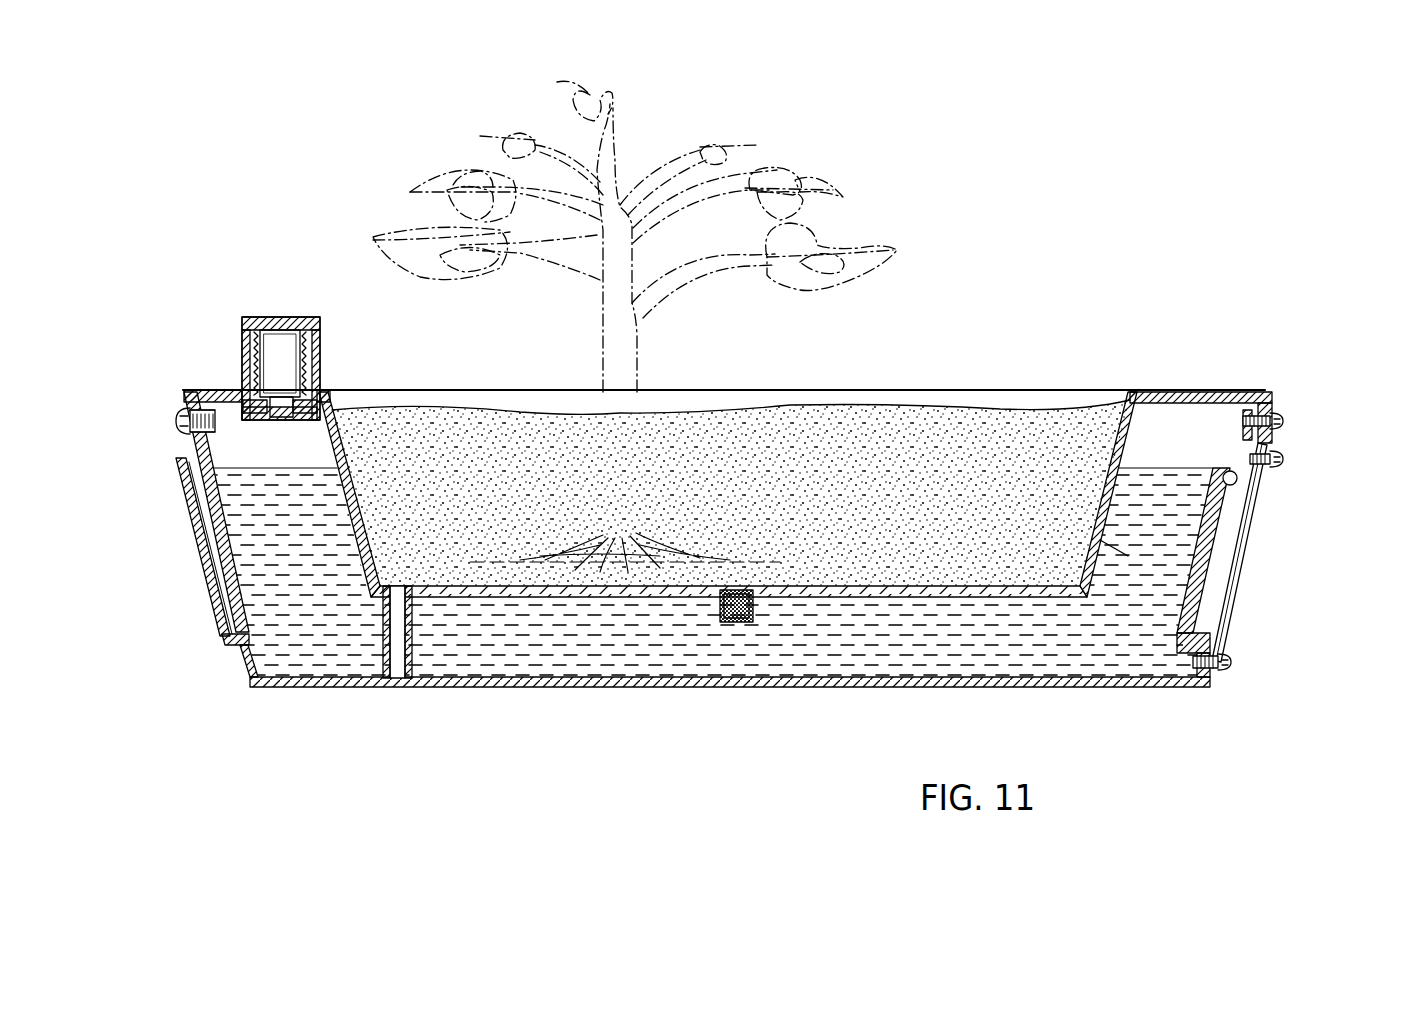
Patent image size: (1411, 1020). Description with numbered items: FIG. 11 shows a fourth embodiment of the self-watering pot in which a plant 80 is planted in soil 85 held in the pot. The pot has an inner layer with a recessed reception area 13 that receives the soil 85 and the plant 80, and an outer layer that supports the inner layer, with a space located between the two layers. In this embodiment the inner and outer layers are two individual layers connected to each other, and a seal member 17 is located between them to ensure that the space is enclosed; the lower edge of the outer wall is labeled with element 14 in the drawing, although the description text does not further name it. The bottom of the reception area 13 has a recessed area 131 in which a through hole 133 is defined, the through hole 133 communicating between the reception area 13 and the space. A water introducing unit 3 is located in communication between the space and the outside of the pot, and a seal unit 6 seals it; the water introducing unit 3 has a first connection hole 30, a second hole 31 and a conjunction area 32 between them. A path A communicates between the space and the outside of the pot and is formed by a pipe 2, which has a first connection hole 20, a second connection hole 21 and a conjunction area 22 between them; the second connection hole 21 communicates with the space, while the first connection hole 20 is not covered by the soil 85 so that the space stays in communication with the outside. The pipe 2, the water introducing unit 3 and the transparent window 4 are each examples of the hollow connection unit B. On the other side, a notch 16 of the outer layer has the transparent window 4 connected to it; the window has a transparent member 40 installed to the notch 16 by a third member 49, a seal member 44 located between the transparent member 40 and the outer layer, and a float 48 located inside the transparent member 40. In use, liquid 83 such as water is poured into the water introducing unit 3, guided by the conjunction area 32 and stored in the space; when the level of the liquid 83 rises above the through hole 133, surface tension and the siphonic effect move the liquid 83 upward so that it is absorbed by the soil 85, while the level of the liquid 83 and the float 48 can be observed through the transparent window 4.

The pipe 2 is at (118, 483).
The water introducing unit 3 is at (220, 284).
The transparent window 4 is at (1317, 470).
The seal unit 6 is at (277, 322).
The reception area 13 is at (443, 398).
The tank bottom flange 14 is at (222, 639).
The notch 16 is at (1128, 556).
The seal member 17 is at (415, 602).
The first connection hole 20 is at (178, 468).
The second connection hole 21 is at (215, 607).
The conjunction area 22 is at (190, 522).
The first connection hole 30 is at (244, 336).
The second hole 31 is at (287, 402).
The conjunction area 32 is at (273, 368).
The transparent member 40 is at (1240, 584).
The seal member 44 is at (1265, 483).
The float 48 is at (1253, 514).
The third member 49 is at (1280, 467).
The plant 80 is at (450, 186).
The liquid 83 is at (345, 652).
The soil 85 is at (388, 410).
The recessed area 131 is at (718, 607).
The through hole 133 is at (736, 624).
The path A is at (78, 517).
The connection unit B is at (156, 277).